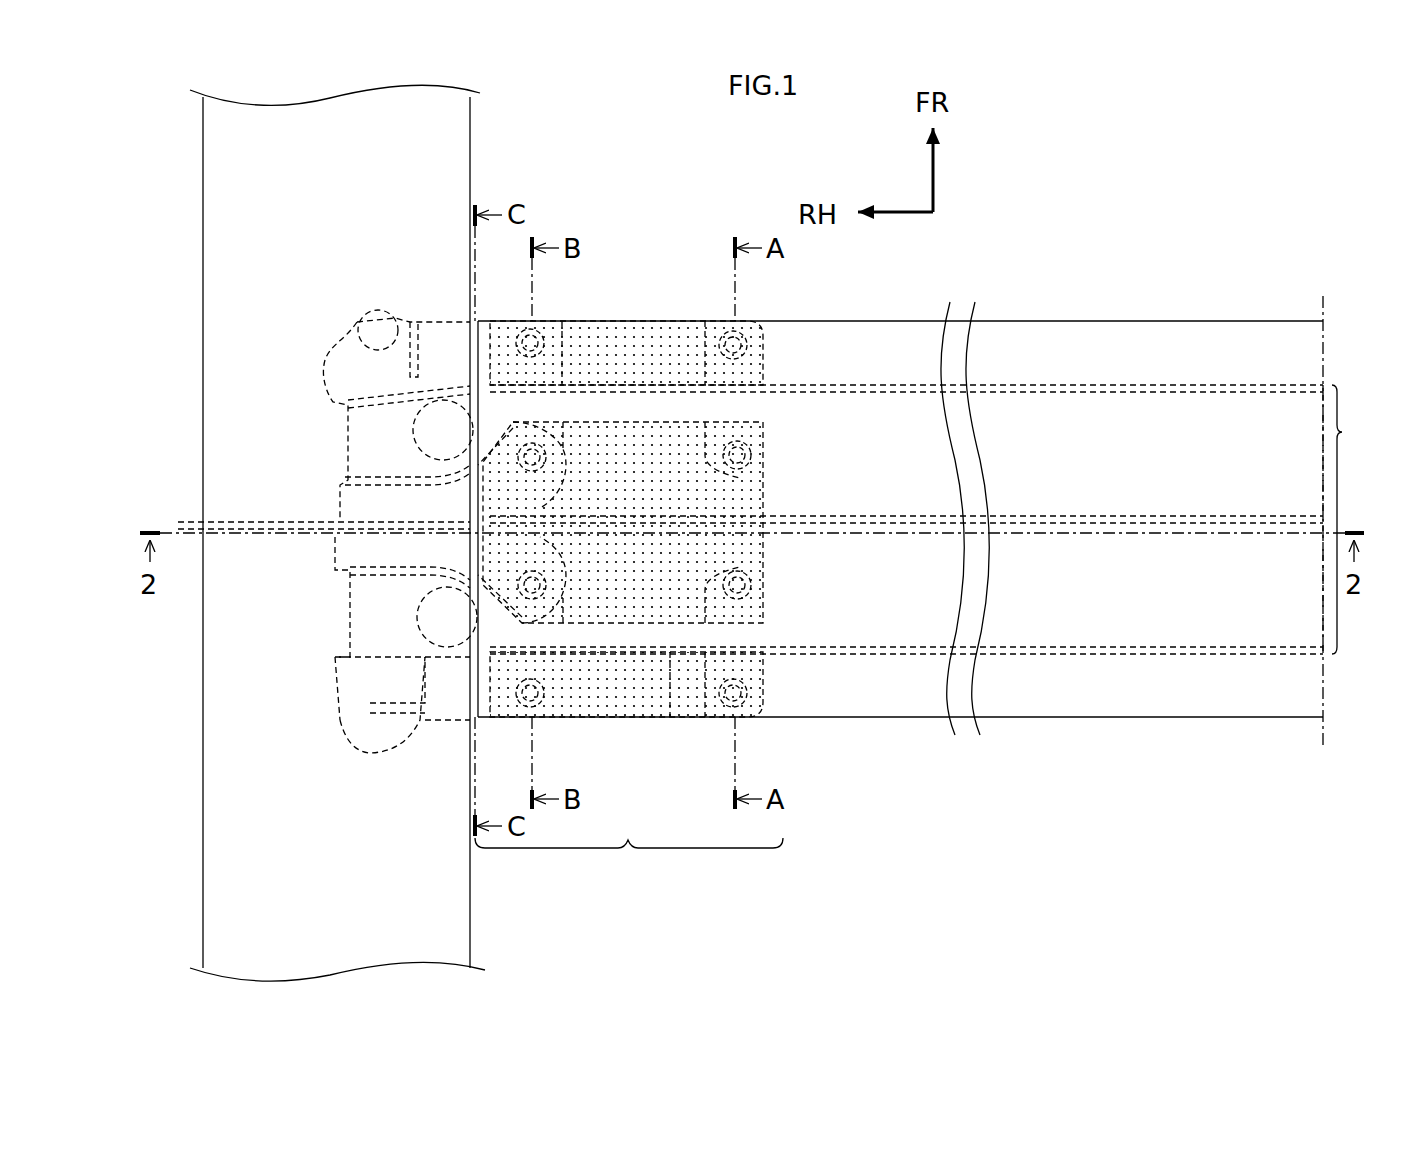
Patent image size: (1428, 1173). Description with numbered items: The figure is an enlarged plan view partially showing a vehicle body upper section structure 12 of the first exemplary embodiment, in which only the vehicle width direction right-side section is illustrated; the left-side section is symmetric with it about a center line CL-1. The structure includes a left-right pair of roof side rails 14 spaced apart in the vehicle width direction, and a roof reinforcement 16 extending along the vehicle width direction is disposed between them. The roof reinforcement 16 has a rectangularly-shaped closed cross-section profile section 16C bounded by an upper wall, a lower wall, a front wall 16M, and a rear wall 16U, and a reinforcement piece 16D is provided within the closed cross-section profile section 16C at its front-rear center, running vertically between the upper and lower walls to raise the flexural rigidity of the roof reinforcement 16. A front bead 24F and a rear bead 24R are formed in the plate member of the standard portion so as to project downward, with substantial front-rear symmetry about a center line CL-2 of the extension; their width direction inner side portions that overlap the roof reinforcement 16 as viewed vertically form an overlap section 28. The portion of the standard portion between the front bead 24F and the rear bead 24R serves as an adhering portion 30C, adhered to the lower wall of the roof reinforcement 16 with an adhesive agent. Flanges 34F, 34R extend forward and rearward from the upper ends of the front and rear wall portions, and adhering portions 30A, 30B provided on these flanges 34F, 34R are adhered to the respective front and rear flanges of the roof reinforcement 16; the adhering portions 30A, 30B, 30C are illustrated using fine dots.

The vehicle body upper section structure 12 is at (1023, 158).
The roof side rail 14 is at (158, 866).
The roof reinforcement 16 is at (1075, 722).
The front wall 16M is at (1257, 383).
The closed cross-section profile section 16C is at (1360, 519).
The reinforcement piece 16D is at (1125, 524).
The rear wall 16U is at (1297, 655).
The center line CL-1 is at (1323, 740).
The center line of the extension CL-2 is at (1385, 520).
The overlap section 28 is at (629, 863).
The adhering portion 30A is at (645, 331).
The adhering portion 30B is at (626, 716).
The adhering portion 30C is at (767, 508).
The flange 34F is at (767, 358).
The flange 34R is at (767, 685).
The front bead 24F is at (765, 405).
The rear bead 24R is at (765, 622).